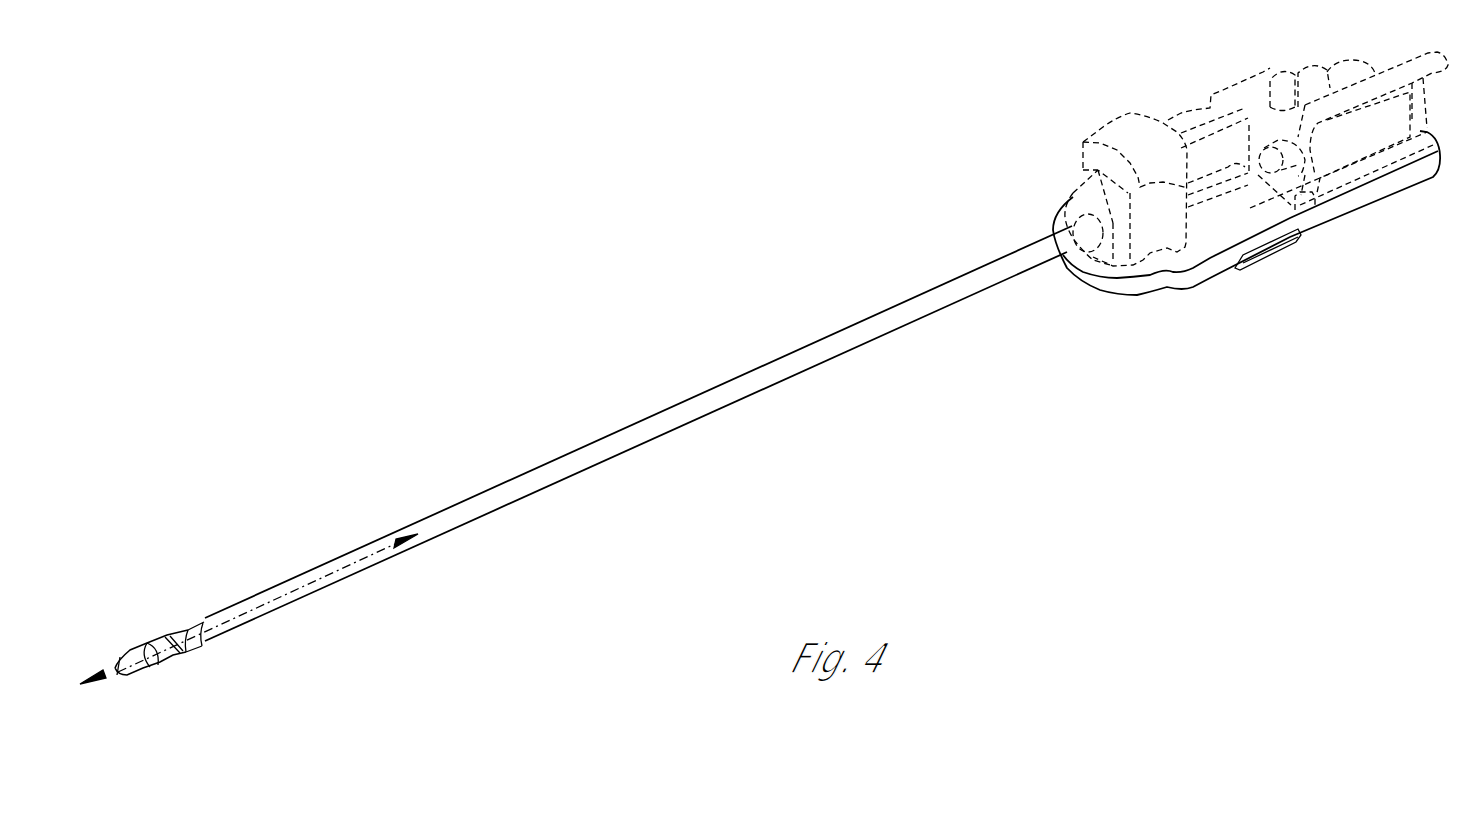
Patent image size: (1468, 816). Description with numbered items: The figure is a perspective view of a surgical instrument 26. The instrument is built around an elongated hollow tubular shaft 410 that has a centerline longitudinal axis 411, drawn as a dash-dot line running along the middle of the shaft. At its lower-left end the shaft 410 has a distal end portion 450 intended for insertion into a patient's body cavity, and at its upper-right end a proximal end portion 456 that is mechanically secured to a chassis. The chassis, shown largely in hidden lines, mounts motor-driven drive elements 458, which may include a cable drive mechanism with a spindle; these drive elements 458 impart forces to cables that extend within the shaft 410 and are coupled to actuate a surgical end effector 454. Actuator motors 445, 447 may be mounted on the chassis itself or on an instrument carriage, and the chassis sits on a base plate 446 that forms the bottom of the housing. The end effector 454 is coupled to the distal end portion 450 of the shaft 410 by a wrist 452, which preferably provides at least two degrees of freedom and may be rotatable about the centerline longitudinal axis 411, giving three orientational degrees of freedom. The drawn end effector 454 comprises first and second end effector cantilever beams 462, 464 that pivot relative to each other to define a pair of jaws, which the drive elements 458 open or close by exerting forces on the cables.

The surgical instrument 26 is at (858, 226).
The elongated hollow tubular shaft 410 is at (618, 457).
The centerline longitudinal axis 411 is at (363, 557).
The actuator motor 445 is at (1298, 73).
The base plate of handle 446 is at (1368, 210).
The actuator motor 447 is at (1295, 163).
The distal end portion 450 is at (253, 650).
The wrist 452 is at (198, 622).
The surgical end effector 454 is at (188, 688).
The proximal end portion 456 is at (1045, 292).
The motor-driven drive elements 458 is at (1124, 122).
The first end effector cantilever beam 462 is at (127, 652).
The second end effector cantilever beam 464 is at (130, 668).